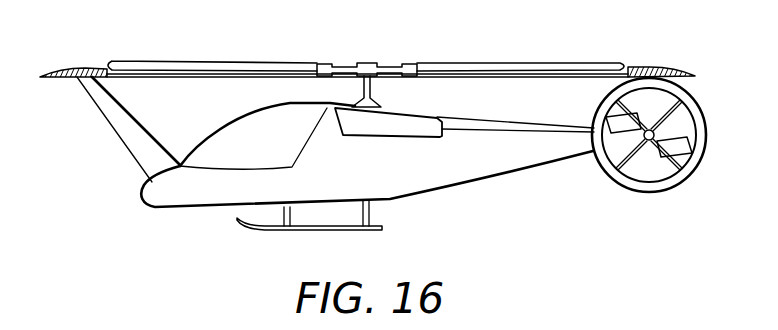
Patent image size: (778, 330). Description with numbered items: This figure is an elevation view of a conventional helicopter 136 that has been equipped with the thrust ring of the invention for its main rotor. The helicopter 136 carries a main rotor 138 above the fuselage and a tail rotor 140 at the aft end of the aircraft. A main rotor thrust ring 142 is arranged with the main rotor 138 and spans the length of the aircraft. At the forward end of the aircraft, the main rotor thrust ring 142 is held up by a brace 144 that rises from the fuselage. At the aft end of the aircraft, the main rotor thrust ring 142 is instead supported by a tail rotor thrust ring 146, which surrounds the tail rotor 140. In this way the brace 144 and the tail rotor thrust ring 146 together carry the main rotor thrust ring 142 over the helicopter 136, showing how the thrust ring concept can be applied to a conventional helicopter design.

The helicopter 136 is at (143, 209).
The main rotor 138 is at (215, 67).
The tail rotor 140 is at (677, 142).
The main rotor thrust ring 142 is at (77, 68).
The brace 144 is at (130, 131).
The tail rotor thrust ring 146 is at (602, 108).